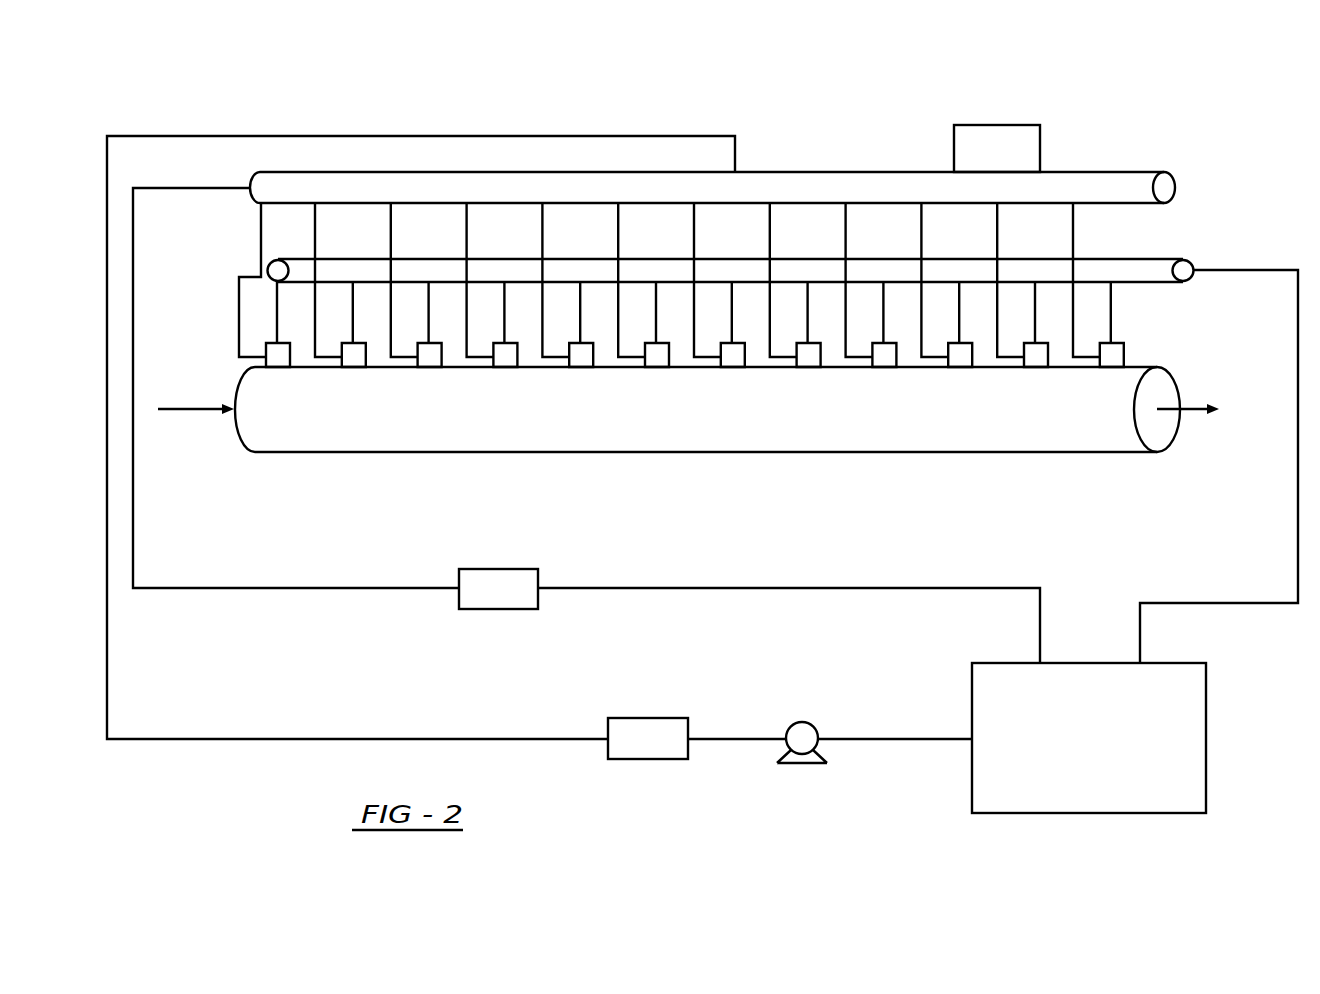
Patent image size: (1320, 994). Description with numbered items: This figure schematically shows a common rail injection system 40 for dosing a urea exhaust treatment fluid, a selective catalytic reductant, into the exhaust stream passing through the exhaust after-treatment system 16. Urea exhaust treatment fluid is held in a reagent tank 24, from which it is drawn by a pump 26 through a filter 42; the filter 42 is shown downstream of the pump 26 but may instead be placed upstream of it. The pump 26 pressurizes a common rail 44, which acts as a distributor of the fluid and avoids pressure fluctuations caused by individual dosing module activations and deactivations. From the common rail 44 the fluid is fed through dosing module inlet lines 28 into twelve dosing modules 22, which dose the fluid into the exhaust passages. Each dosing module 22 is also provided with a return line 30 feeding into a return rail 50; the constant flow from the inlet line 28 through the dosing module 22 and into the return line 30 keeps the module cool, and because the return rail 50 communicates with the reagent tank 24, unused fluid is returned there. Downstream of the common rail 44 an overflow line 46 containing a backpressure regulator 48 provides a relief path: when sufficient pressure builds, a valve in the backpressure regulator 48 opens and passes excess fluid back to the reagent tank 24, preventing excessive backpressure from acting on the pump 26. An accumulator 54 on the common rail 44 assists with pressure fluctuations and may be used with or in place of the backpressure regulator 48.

The common rail injection system 40 is at (272, 107).
The common rail 44 is at (757, 172).
The accumulator 54 is at (986, 159).
The return rail 50 is at (1162, 268).
The return lines 30 is at (1110, 333).
The dosing module inlet lines 28 is at (1072, 336).
The dosing modules 22 is at (1126, 458).
The exhaust after-treatment system 16 is at (713, 460).
The overflow line 46 is at (677, 589).
The backpressure regulator 48 is at (497, 609).
The filter 42 is at (660, 759).
The pump 26 is at (802, 722).
The reagent tank 24 is at (1079, 748).